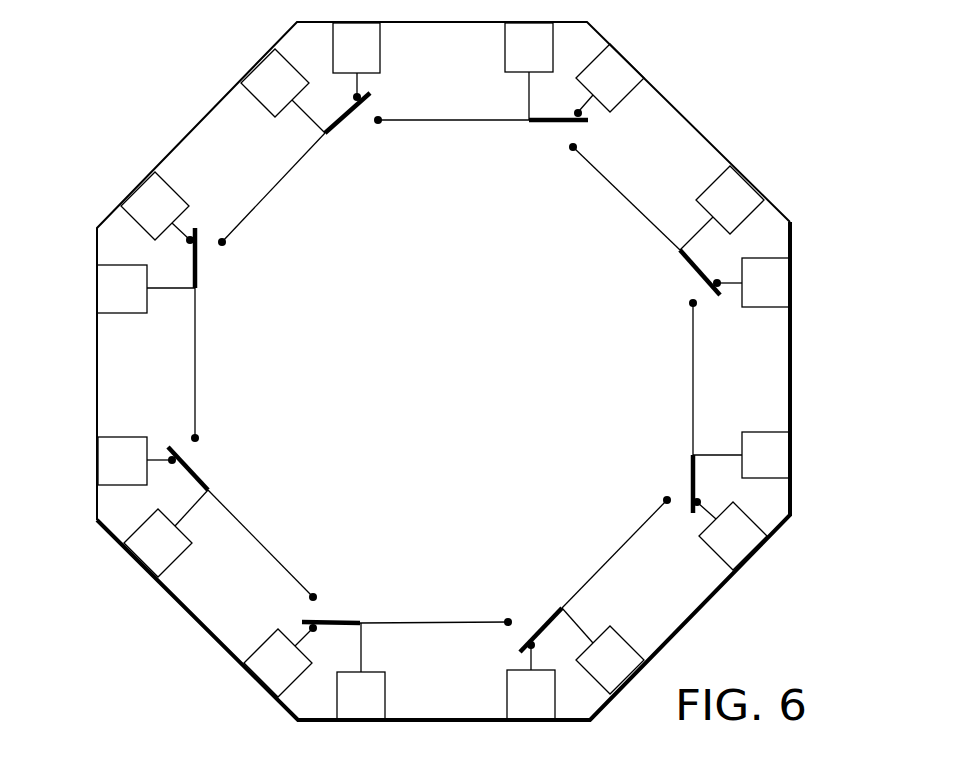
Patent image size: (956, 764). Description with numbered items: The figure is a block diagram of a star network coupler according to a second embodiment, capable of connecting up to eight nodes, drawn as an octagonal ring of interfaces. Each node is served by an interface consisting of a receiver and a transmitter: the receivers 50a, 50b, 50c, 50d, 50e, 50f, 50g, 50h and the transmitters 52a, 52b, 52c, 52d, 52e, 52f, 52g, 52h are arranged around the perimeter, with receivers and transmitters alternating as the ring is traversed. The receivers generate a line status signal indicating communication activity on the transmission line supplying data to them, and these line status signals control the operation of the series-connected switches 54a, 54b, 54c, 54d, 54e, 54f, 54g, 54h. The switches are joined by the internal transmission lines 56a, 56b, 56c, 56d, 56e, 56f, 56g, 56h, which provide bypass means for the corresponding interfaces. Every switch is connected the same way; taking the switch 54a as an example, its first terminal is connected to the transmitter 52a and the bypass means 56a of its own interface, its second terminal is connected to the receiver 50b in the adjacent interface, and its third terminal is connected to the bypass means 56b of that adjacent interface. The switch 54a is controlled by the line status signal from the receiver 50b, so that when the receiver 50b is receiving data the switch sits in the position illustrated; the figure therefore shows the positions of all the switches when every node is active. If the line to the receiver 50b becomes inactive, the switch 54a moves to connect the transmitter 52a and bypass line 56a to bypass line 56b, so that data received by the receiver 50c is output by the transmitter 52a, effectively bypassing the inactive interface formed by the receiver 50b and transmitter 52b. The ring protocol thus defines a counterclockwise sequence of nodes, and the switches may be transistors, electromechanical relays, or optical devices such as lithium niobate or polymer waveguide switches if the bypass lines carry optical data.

The receiver 50a is at (507, 702).
The receiver 50b is at (265, 638).
The receiver 50c is at (122, 437).
The receiver 50d is at (170, 182).
The receiver 50e is at (381, 58).
The receiver 50f is at (615, 114).
The receiver 50g is at (778, 308).
The receiver 50h is at (713, 560).
The transmitter 52a is at (385, 702).
The transmitter 52b is at (172, 562).
The transmitter 52c is at (118, 313).
The transmitter 52d is at (275, 117).
The transmitter 52e is at (503, 40).
The transmitter 52f is at (720, 174).
The transmitter 52g is at (773, 430).
The transmitter 52h is at (632, 642).
The switch 54a is at (335, 603).
The switch 54b is at (197, 458).
The switch 54c is at (213, 262).
The switch 54d is at (367, 115).
The switch 54e is at (565, 136).
The switch 54f is at (687, 293).
The switch 54g is at (684, 500).
The switch 54h is at (527, 617).
The bypass means 56a is at (425, 622).
The bypass means 56b is at (263, 538).
The internal transmission line 56c is at (197, 393).
The internal transmission line 56d is at (265, 197).
The internal transmission line 56e is at (410, 122).
The internal transmission line 56f is at (648, 220).
The internal transmission line 56g is at (693, 383).
The internal transmission line 56h is at (642, 527).